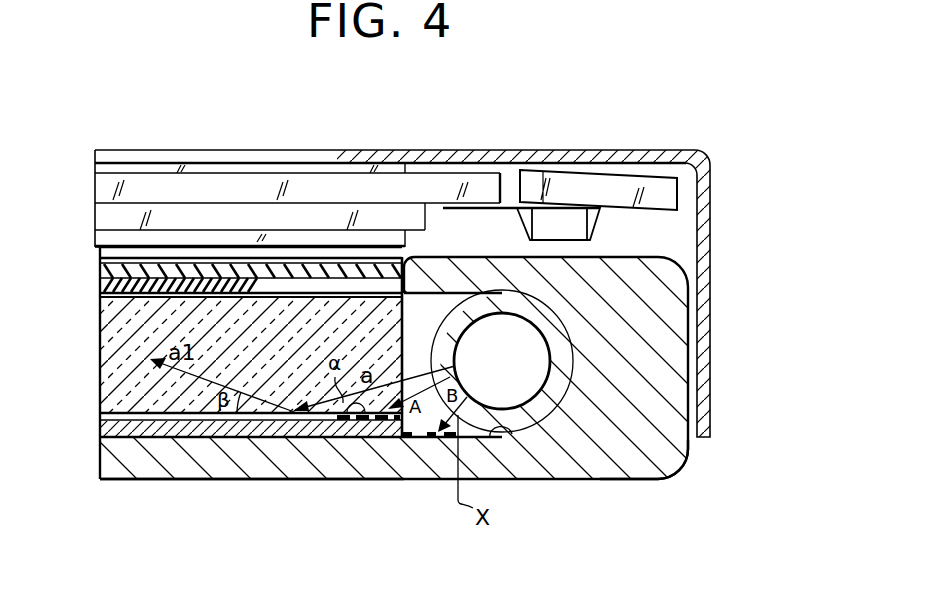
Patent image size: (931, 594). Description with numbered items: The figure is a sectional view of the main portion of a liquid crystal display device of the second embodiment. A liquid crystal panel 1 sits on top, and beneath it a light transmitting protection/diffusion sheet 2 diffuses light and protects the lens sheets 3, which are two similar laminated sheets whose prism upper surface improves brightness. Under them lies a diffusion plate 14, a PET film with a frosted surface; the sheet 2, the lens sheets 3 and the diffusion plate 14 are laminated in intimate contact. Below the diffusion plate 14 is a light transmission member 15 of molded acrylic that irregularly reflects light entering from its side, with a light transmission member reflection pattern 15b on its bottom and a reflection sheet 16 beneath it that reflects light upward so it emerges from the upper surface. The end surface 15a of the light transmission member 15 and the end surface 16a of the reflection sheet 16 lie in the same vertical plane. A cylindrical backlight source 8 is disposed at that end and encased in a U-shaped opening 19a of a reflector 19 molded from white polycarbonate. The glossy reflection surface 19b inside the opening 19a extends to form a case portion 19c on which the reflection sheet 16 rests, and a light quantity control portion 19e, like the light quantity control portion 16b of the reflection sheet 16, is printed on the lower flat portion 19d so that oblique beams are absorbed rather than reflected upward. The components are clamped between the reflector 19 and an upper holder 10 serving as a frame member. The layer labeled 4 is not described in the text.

The liquid crystal panel 1 is at (90, 163).
The protection/diffusion sheet 2 is at (93, 250).
The lens sheets 3 is at (95, 266).
The prism sheet 4 is at (93, 284).
The backlight source 8 is at (523, 340).
The upper holder 10 is at (688, 155).
The diffusion plate 14 is at (97, 307).
The light transmission member 15 is at (103, 363).
The end surface of light transmission member 15a is at (407, 330).
The light transmission member reflection pattern 15b is at (150, 428).
The reflection sheet 16 is at (102, 428).
The end surface of reflection sheet 16a is at (397, 422).
The light quantity control portion of reflection sheet 16b is at (329, 432).
The reflector 19 is at (411, 335).
The U-shaped opening 19a is at (445, 366).
The reflection surface 19b is at (600, 443).
The case portion 19c is at (216, 466).
The lower flat portion 19d is at (512, 432).
The light quantity control portion of reflector 19e is at (418, 438).